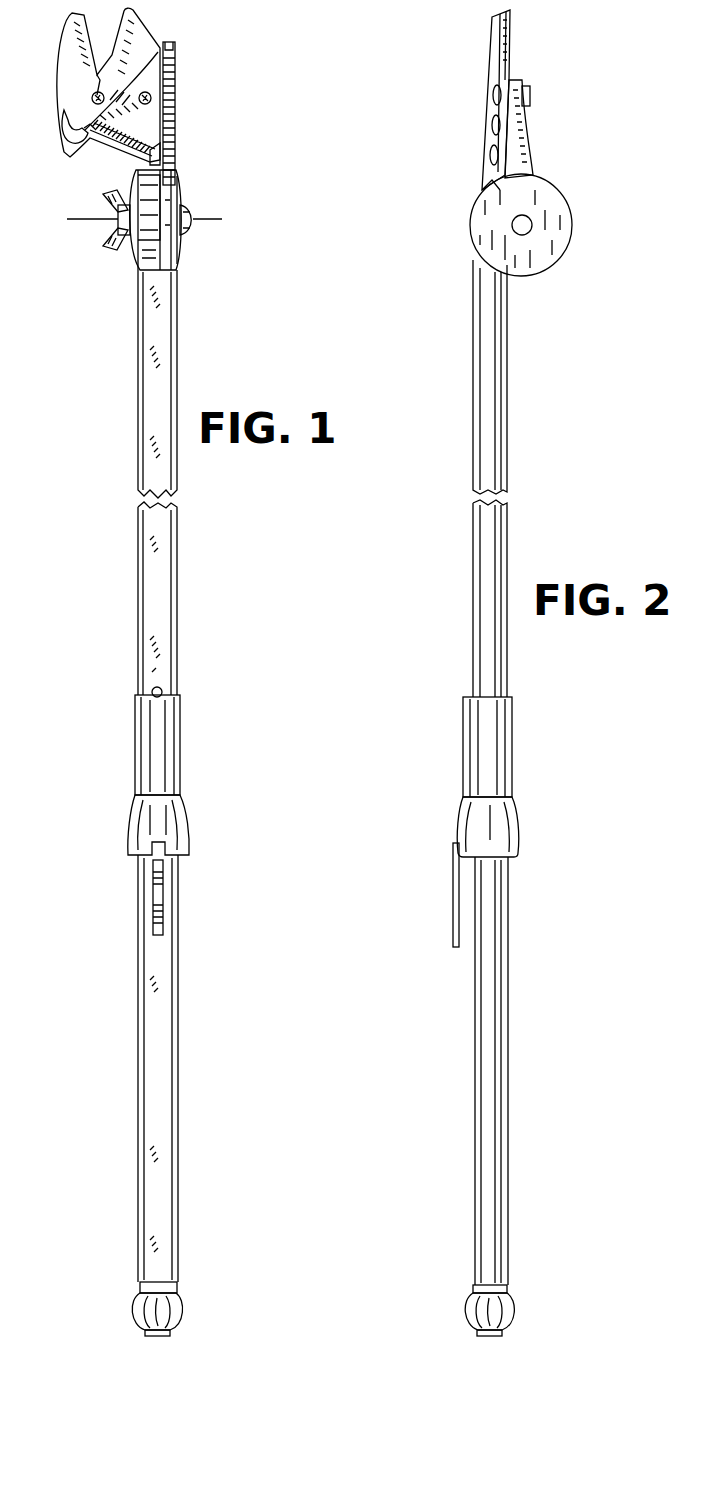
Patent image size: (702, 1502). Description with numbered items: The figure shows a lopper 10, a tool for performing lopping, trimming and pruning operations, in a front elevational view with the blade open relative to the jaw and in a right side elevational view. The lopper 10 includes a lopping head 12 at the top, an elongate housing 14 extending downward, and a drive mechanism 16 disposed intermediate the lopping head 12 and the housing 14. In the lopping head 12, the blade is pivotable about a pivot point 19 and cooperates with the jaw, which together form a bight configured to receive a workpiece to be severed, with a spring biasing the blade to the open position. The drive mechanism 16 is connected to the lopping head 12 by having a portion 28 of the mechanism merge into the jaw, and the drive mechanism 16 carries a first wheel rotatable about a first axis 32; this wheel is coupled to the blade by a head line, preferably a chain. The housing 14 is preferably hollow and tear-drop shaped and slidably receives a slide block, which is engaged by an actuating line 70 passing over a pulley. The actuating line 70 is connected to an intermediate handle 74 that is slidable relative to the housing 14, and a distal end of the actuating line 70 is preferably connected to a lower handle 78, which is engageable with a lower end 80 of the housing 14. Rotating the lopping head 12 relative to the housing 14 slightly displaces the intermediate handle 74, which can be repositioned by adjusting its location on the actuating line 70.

In FIG. 1, the lopper 10 is at (112, 378).
In FIG. 2, the lopper 10 is at (540, 380).
In FIG. 1, the lopping head 12 is at (186, 66).
In FIG. 2, the lopping head 12 is at (478, 95).
In FIG. 1, the elongate housing 14 is at (163, 612).
In FIG. 2, the elongate housing 14 is at (488, 610).
In FIG. 1, the drive mechanism 16 is at (198, 209).
In FIG. 2, the drive mechanism 16 is at (560, 186).
In FIG. 1, the pivot point 19 is at (82, 130).
In FIG. 2, the portion 28 is at (522, 137).
In FIG. 1, the first axis 32 is at (222, 219).
In FIG. 2, the first axis 32 is at (523, 232).
In FIG. 1, the actuating line 70 is at (163, 907).
In FIG. 2, the actuating line 70 is at (452, 922).
In FIG. 1, the intermediate handle 74 is at (160, 750).
In FIG. 2, the intermediate handle 74 is at (485, 763).
In FIG. 1, the lower handle 78 is at (176, 1300).
In FIG. 2, the lower handle 78 is at (483, 1305).
In FIG. 1, the lower end 80 is at (133, 1291).
In FIG. 2, the lower end 80 is at (510, 1292).